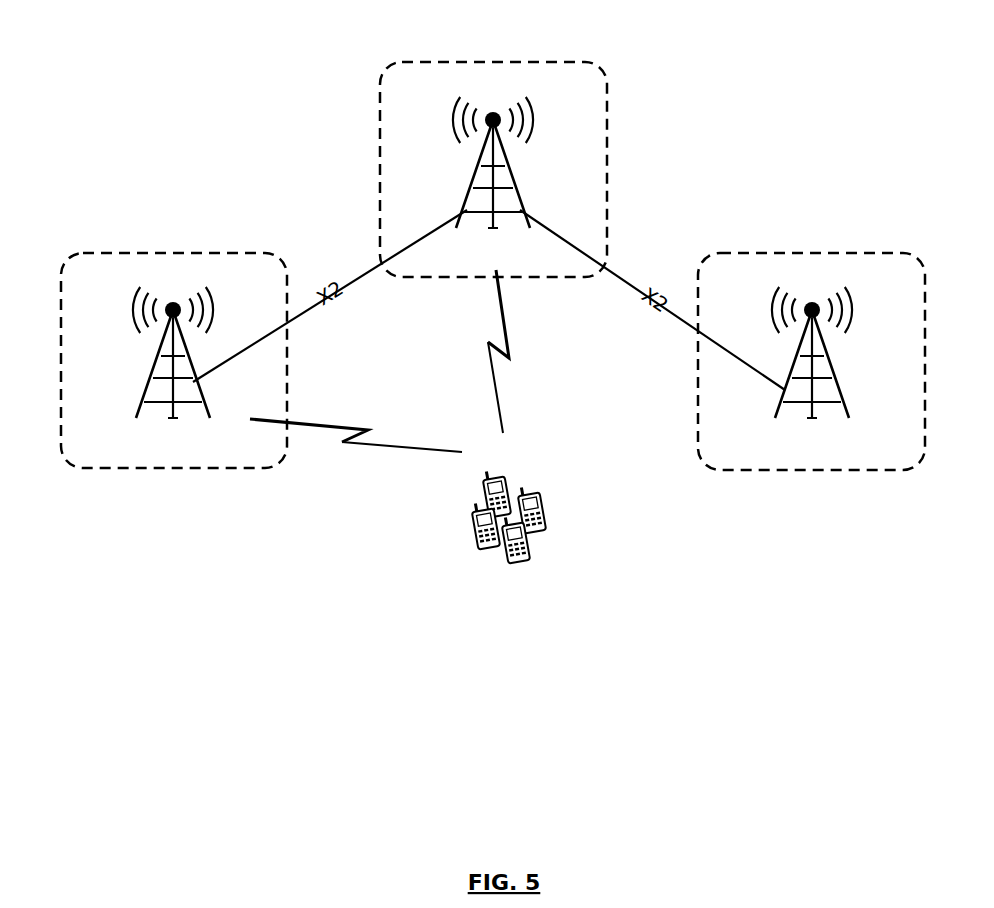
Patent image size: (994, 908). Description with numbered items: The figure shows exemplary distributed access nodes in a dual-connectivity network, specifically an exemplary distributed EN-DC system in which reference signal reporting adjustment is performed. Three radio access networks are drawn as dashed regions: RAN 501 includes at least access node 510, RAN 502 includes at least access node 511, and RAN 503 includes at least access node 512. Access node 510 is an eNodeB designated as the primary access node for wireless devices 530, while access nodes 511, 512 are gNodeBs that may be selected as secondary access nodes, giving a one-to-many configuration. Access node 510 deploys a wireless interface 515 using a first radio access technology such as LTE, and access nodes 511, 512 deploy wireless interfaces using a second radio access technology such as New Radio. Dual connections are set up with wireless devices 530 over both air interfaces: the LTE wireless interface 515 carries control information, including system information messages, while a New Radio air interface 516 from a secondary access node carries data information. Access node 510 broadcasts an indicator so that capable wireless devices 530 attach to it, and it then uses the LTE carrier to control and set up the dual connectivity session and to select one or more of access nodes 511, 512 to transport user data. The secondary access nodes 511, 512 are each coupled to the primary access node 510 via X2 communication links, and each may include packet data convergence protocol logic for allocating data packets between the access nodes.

The RAN 501 is at (422, 60).
The RAN 502 is at (112, 253).
The RAN 503 is at (816, 252).
The access node 510 is at (478, 197).
The access node 511 is at (150, 400).
The access node 512 is at (837, 390).
The wireless interface 515 is at (487, 348).
The 5G NR air interface 516 is at (385, 450).
The wireless devices 530 is at (547, 573).